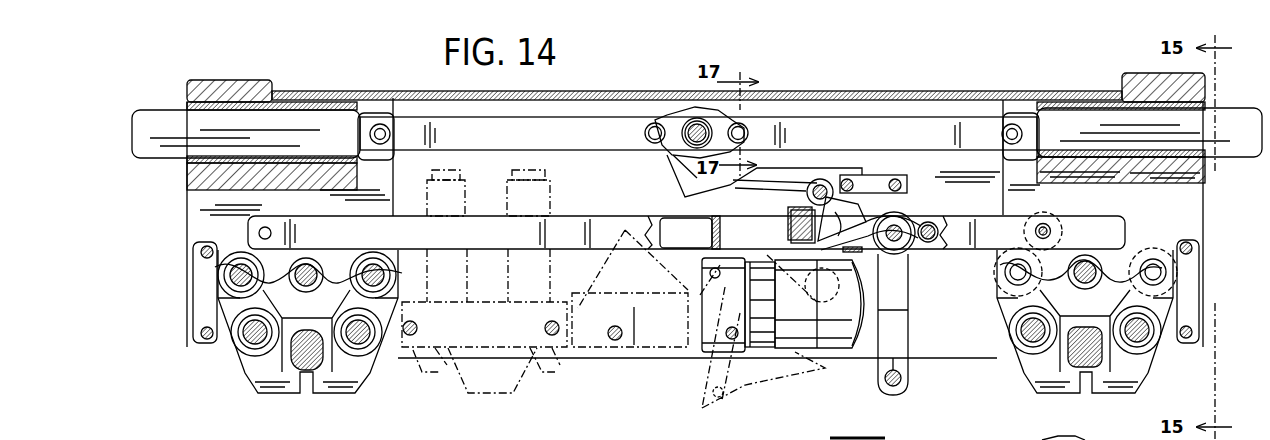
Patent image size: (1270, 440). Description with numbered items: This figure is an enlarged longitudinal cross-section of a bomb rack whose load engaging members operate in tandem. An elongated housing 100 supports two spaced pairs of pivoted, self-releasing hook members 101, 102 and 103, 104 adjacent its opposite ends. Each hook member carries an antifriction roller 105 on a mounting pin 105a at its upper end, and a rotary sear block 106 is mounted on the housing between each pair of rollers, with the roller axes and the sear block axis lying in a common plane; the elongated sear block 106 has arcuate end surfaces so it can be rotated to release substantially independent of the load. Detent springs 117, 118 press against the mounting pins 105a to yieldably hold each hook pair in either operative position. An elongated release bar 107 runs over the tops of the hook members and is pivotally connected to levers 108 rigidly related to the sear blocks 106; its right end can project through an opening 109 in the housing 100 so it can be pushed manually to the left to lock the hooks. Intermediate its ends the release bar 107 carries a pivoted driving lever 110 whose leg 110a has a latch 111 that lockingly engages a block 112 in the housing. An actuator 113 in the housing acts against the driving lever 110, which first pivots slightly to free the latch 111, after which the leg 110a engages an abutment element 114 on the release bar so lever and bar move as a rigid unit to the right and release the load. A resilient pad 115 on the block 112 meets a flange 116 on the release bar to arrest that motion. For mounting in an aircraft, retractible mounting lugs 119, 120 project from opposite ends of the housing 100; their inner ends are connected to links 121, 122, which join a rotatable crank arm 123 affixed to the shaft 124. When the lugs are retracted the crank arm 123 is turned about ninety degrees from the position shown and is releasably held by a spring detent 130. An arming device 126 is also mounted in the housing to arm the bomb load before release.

The elongated housing 100 is at (838, 100).
The hook member 101 is at (277, 384).
The hook member 102 is at (333, 384).
The hook member 103 is at (1040, 375).
The hook member 104 is at (1135, 374).
The antifriction roller 105 is at (240, 247).
The mounting pin 105a is at (235, 280).
The rotary sear block 106 is at (332, 272).
The release bar 107 is at (562, 228).
The lever 108 is at (290, 252).
The opening 109 is at (1192, 234).
The driving lever 110 is at (900, 304).
The leg 110a is at (818, 290).
The latch 111 is at (883, 214).
The block 112 is at (855, 176).
The actuator 113 is at (680, 337).
The abutment element 114 is at (904, 254).
The resilient pad 115 is at (786, 223).
The flange 116 is at (712, 236).
The detent spring 117 is at (217, 268).
The detent spring 118 is at (1040, 293).
The retractible mounting lug 119 is at (163, 158).
The retractible mounting lug 120 is at (1242, 157).
The link 121 is at (455, 128).
The link 122 is at (893, 130).
The crank arm 123 is at (662, 116).
The shaft 124 is at (692, 118).
The arming device 126 is at (490, 395).
The spring detent 130 is at (672, 173).